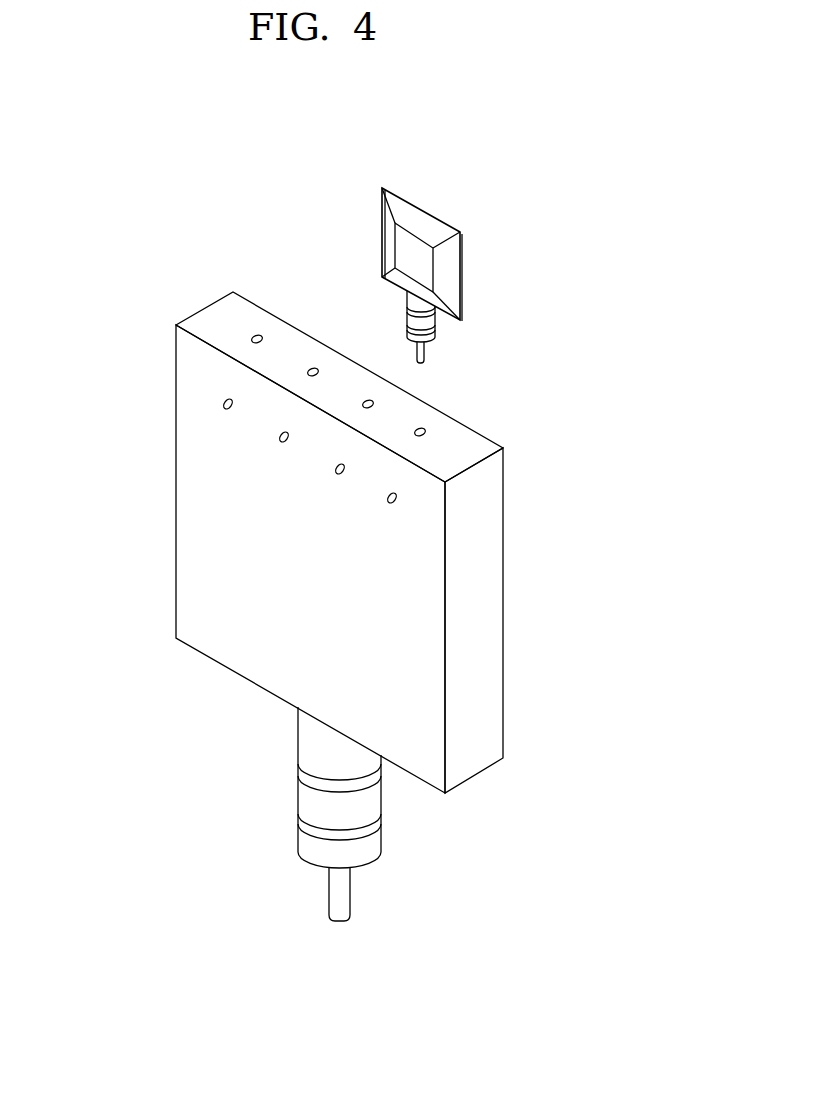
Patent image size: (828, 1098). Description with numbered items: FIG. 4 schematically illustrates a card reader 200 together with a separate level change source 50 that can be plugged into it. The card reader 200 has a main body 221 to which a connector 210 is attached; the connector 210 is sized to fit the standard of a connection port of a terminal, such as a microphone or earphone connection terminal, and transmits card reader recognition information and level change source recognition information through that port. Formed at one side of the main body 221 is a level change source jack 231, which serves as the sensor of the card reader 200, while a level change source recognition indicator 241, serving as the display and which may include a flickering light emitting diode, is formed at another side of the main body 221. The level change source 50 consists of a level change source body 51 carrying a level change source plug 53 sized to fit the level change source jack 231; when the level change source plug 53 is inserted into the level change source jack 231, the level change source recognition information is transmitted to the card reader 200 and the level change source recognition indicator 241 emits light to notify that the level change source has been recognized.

The level change source 50 is at (362, 228).
The level change source body 51 is at (422, 210).
The level change source plug 53 is at (407, 313).
The card reader 200 is at (147, 643).
The main body 221 is at (505, 604).
The level change source jack 231 is at (427, 428).
The level change source recognition indicator 241 is at (222, 402).
The connector 210 is at (298, 773).